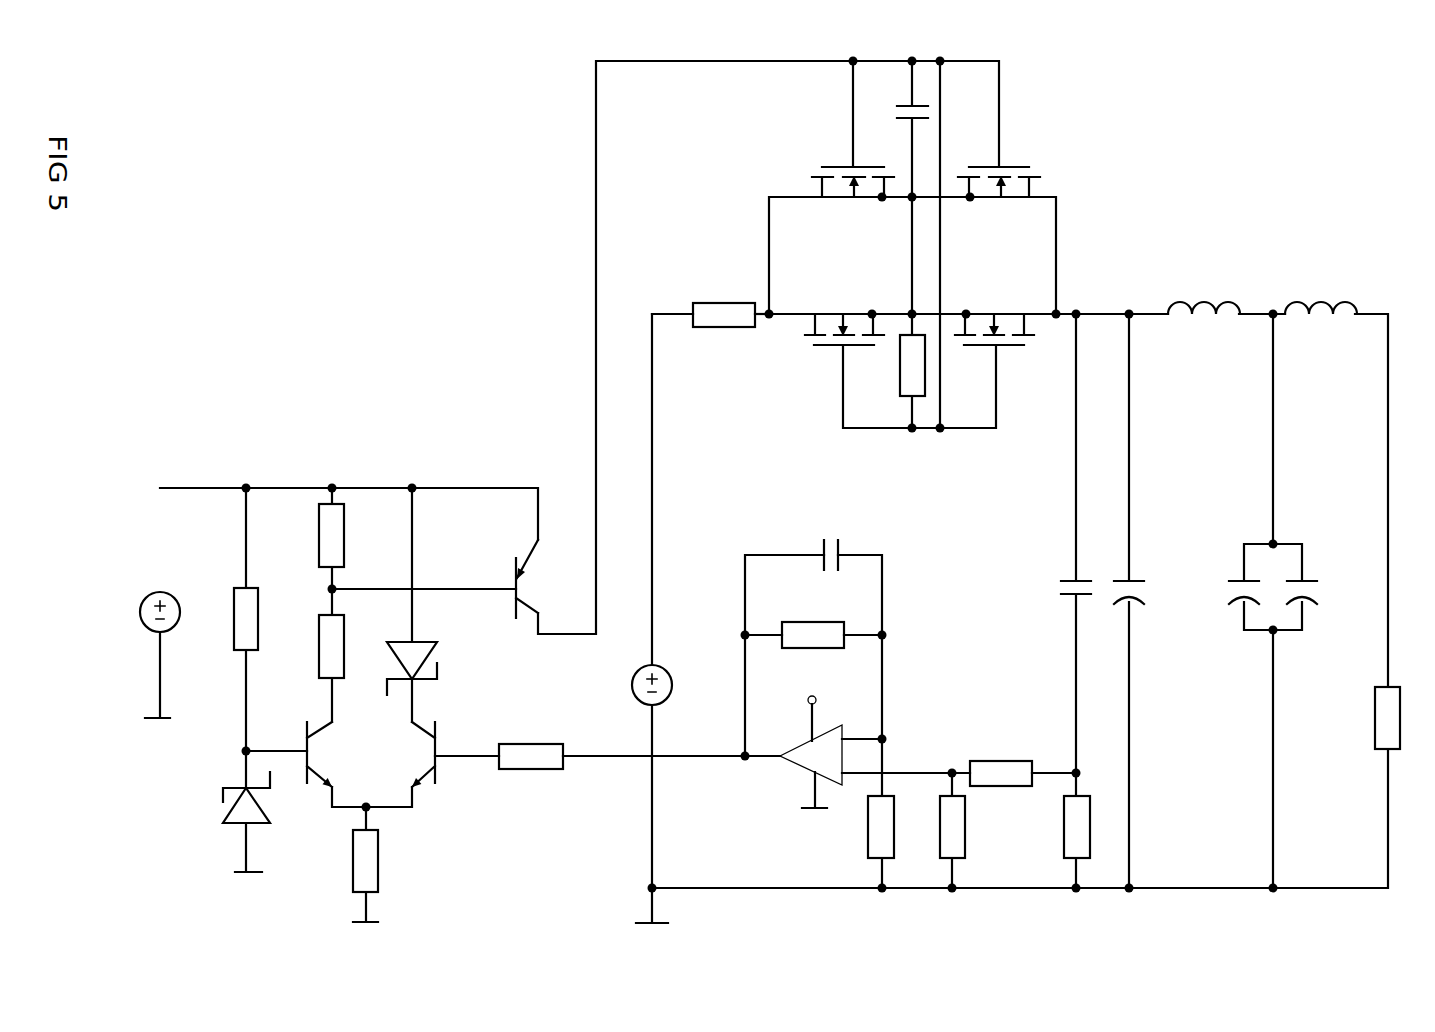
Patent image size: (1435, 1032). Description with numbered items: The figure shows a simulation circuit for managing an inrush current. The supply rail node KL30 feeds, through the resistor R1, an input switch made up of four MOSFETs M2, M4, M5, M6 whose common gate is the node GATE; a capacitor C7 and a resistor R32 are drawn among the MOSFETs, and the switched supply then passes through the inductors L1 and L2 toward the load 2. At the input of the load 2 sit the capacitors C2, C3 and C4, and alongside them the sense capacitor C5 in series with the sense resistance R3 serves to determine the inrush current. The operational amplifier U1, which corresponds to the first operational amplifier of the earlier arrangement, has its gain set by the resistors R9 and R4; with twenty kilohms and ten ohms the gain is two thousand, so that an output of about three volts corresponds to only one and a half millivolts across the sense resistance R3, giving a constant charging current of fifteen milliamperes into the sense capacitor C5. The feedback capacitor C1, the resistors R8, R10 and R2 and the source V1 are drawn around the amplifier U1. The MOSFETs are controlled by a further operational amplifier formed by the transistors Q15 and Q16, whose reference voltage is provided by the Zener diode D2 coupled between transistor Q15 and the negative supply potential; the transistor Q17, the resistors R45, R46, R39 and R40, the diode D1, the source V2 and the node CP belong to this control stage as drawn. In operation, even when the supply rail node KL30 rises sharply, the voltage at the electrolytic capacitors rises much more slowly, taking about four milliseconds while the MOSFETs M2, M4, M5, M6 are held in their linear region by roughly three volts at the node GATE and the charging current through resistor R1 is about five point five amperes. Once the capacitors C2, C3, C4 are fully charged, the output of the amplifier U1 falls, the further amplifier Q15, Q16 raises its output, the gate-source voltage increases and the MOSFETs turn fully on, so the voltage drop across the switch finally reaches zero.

The gate of the MOSFETs GATE is at (899, 46).
The capacitor C7 is at (896, 111).
The MOSFET M5 is at (864, 200).
The MOSFET M6 is at (999, 200).
The MOSFET M2 is at (825, 312).
The MOSFET M4 is at (1008, 312).
The resistor R32 is at (902, 371).
The supply rail node KL30 is at (663, 299).
The resistor R1 is at (731, 300).
The inductor L1 is at (1204, 292).
The inductor L2 is at (1313, 295).
The sense capacitor C5 is at (1061, 587).
The capacitor C2 is at (1145, 588).
The capacitor C3 is at (1237, 572).
The capacitor C4 is at (1309, 604).
The load 2 is at (1398, 718).
The capacitor C1 is at (830, 540).
The resistor R9 is at (814, 622).
The operational amplifier U1 is at (814, 752).
The resistor R4 is at (1014, 761).
The resistor R8 is at (896, 844).
The resistor R10 is at (974, 844).
The sense resistance R3 is at (1171, 844).
The voltage source V1 is at (635, 794).
The resistor R2 is at (531, 743).
The transistor Q17 is at (546, 579).
The charge pump node CP is at (329, 470).
The voltage source V2 is at (142, 655).
The resistor R45 is at (266, 619).
The resistor R46 is at (312, 549).
The resistor R39 is at (310, 646).
The diode D1 is at (431, 667).
The Zener diode D2 is at (232, 810).
The transistor Q15 is at (336, 764).
The transistor Q16 is at (400, 764).
The resistor R40 is at (384, 863).